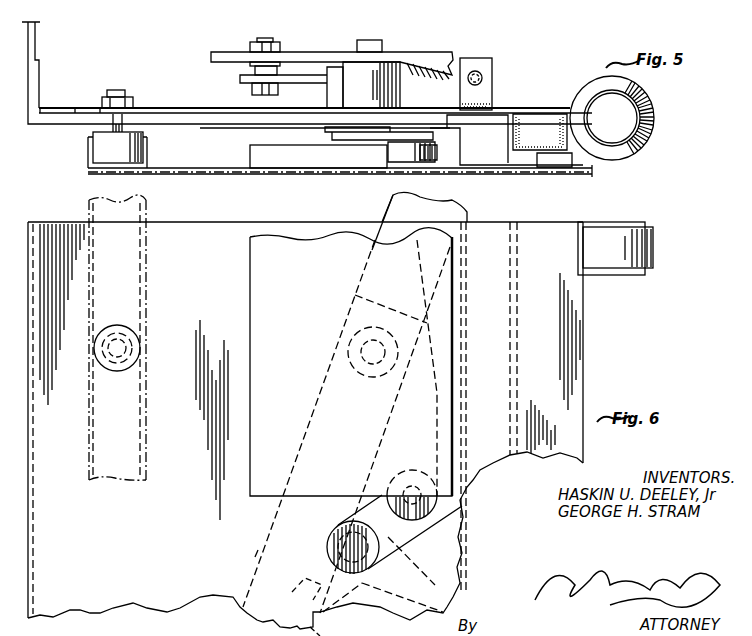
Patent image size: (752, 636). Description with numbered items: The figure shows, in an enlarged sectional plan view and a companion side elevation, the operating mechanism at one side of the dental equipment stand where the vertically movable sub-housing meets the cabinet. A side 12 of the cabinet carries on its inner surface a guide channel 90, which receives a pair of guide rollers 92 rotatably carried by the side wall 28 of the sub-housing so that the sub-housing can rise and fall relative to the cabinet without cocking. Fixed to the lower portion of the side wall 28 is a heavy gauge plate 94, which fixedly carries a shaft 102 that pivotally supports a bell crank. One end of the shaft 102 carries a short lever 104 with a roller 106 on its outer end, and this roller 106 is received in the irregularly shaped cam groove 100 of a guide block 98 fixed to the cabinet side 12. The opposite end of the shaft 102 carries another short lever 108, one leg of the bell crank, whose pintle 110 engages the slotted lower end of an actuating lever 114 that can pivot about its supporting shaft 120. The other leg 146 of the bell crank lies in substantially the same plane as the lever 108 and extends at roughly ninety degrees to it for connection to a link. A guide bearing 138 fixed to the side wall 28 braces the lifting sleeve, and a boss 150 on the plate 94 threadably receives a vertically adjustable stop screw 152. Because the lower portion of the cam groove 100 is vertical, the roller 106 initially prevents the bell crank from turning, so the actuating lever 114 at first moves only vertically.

In FIG. 5, the side 12 is at (276, 174).
In FIG. 6, the side 12 is at (50, 232).
In FIG. 5, the side wall 28 is at (190, 124).
In FIG. 5, the guide channel 90 is at (88, 150).
In FIG. 6, the guide channel 90 is at (146, 242).
In FIG. 5, the guide roller 92 is at (143, 147).
In FIG. 6, the guide roller 92 is at (140, 348).
In FIG. 5, the heavy gauge plate 94 is at (72, 108).
In FIG. 5, the guide block 98 is at (326, 160).
In FIG. 6, the guide block 98 is at (262, 445).
In FIG. 5, the cam groove 100 is at (425, 163).
In FIG. 6, the cam groove 100 is at (440, 392).
In FIG. 6, the shaft 102 is at (352, 521).
In FIG. 5, the short lever 104 is at (370, 140).
In FIG. 6, the short lever 104 is at (393, 540).
In FIG. 5, the roller 106 is at (437, 152).
In FIG. 6, the roller 106 is at (462, 498).
In FIG. 5, the short lever 108 is at (308, 83).
In FIG. 6, the short lever 108 is at (318, 570).
In FIG. 5, the pintle 110 is at (266, 42).
In FIG. 5, the actuating lever 114 is at (318, 52).
In FIG. 6, the actuating lever 114 is at (255, 557).
In FIG. 5, the supporting shaft 120 is at (380, 42).
In FIG. 6, the supporting shaft 120 is at (370, 352).
In FIG. 5, the guide bearing 138 is at (654, 122).
In FIG. 6, the guide bearing 138 is at (653, 247).
In FIG. 6, the leg 146 is at (393, 618).
In FIG. 5, the boss 150 is at (492, 80).
In FIG. 5, the stop screw 152 is at (478, 72).